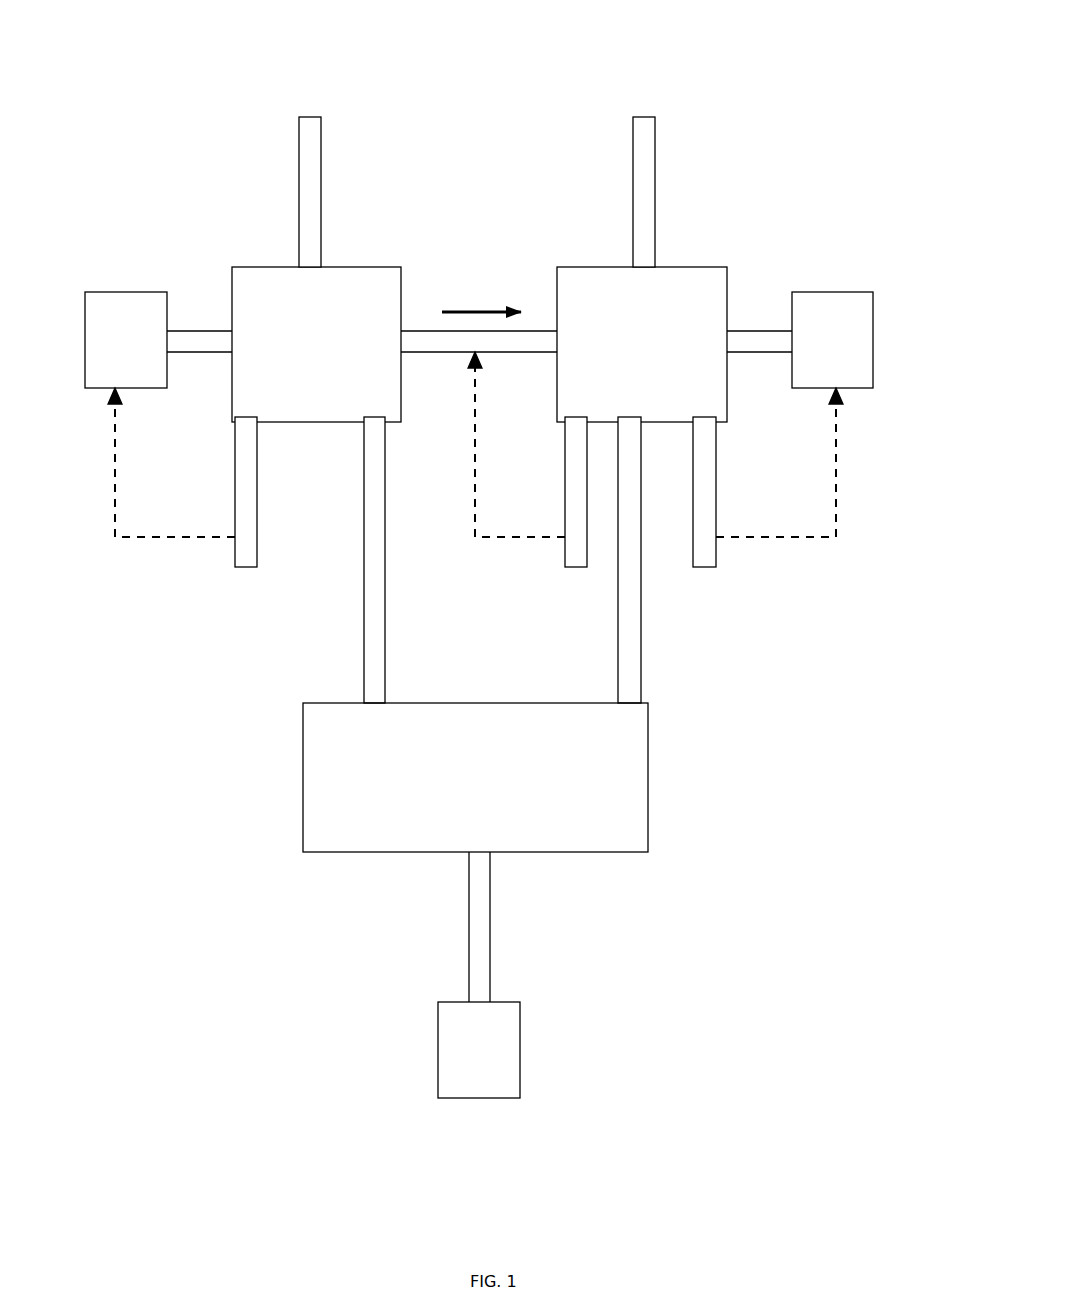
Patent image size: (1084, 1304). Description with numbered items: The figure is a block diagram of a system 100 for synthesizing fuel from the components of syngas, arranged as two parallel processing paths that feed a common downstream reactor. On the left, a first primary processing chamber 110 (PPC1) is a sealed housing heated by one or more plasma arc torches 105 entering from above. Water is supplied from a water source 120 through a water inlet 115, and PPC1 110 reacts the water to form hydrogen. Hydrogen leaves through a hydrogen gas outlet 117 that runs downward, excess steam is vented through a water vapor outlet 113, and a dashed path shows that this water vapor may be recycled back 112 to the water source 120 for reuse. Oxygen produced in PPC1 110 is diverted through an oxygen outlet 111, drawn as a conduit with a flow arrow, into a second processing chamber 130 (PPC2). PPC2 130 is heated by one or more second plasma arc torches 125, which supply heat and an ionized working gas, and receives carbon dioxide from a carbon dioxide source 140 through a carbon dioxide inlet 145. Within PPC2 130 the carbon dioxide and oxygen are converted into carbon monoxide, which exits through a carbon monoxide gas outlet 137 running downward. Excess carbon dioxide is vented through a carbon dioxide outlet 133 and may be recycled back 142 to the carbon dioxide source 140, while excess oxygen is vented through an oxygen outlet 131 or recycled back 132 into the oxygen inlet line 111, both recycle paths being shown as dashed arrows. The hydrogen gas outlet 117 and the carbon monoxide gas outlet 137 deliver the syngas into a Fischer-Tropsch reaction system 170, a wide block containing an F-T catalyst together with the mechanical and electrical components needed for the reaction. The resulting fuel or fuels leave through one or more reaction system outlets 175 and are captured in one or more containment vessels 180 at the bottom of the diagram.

The system 100 is at (867, 100).
The plasma arc torches 105 is at (300, 102).
The first primary processing chamber 110 is at (316, 344).
The oxygen outlet 111 is at (479, 312).
The water vapor recycle line 112 is at (171, 483).
The water vapor outlet 113 is at (251, 505).
The water inlet 115 is at (199, 324).
The hydrogen gas outlet 117 is at (392, 560).
The water source 120 is at (126, 340).
The second plasma arc torches 125 is at (650, 101).
The second processing chamber 130 is at (642, 344).
The oxygen outlet 131 is at (580, 505).
The oxygen recycle line 132 is at (516, 464).
The carbon dioxide outlet 133 is at (718, 505).
The carbon monoxide gas outlet 137 is at (612, 560).
The carbon dioxide source 140 is at (832, 340).
The carbon dioxide recycle line 142 is at (797, 462).
The carbon dioxide inlet 145 is at (759, 320).
The Fischer-Tropsch reaction system 170 is at (475, 777).
The reaction system outlets 175 is at (502, 927).
The containment vessels 180 is at (479, 1050).